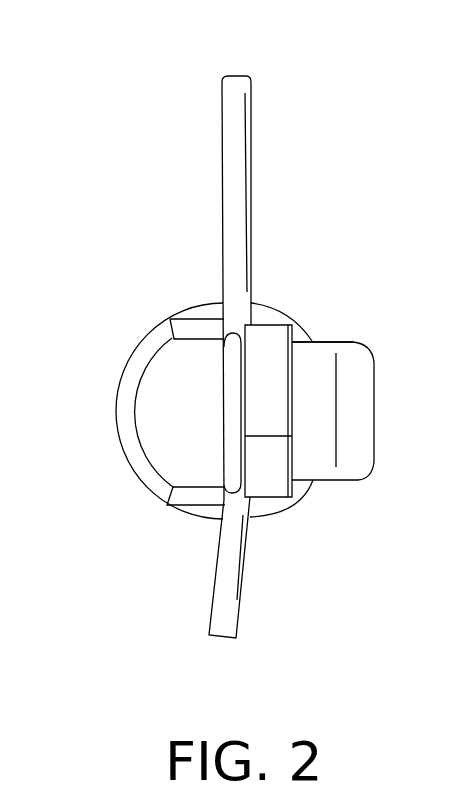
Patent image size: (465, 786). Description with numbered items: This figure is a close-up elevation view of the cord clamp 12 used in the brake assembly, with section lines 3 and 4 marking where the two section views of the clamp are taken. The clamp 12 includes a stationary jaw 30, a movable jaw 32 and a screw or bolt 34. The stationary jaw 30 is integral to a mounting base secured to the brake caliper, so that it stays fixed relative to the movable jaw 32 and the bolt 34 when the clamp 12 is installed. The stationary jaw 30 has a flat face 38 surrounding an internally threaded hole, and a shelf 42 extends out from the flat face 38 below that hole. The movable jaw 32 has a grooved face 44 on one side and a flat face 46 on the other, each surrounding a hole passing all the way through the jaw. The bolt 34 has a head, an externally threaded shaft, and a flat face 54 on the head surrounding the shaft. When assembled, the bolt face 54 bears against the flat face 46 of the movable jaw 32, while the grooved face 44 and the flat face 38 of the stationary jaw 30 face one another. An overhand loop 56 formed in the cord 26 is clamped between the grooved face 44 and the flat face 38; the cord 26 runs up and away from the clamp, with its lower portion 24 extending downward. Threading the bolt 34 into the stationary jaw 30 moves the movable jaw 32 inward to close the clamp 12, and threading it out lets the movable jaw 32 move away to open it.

The section line 3- 3 is at (236, 73).
The section line 4- 4 is at (116, 412).
The clamp 12 is at (244, 361).
The lower strap portion 24 is at (222, 616).
The cord 26 is at (230, 214).
The stationary jaw 30 is at (203, 475).
The movable jaw 32 is at (268, 482).
The bolt 34 is at (353, 461).
The flat face 38 is at (226, 389).
The shelf 42 is at (268, 313).
The grooved face 44 is at (243, 415).
The flat face 46 is at (295, 338).
The flat face 54 is at (247, 437).
The overhand loop 56 is at (232, 368).